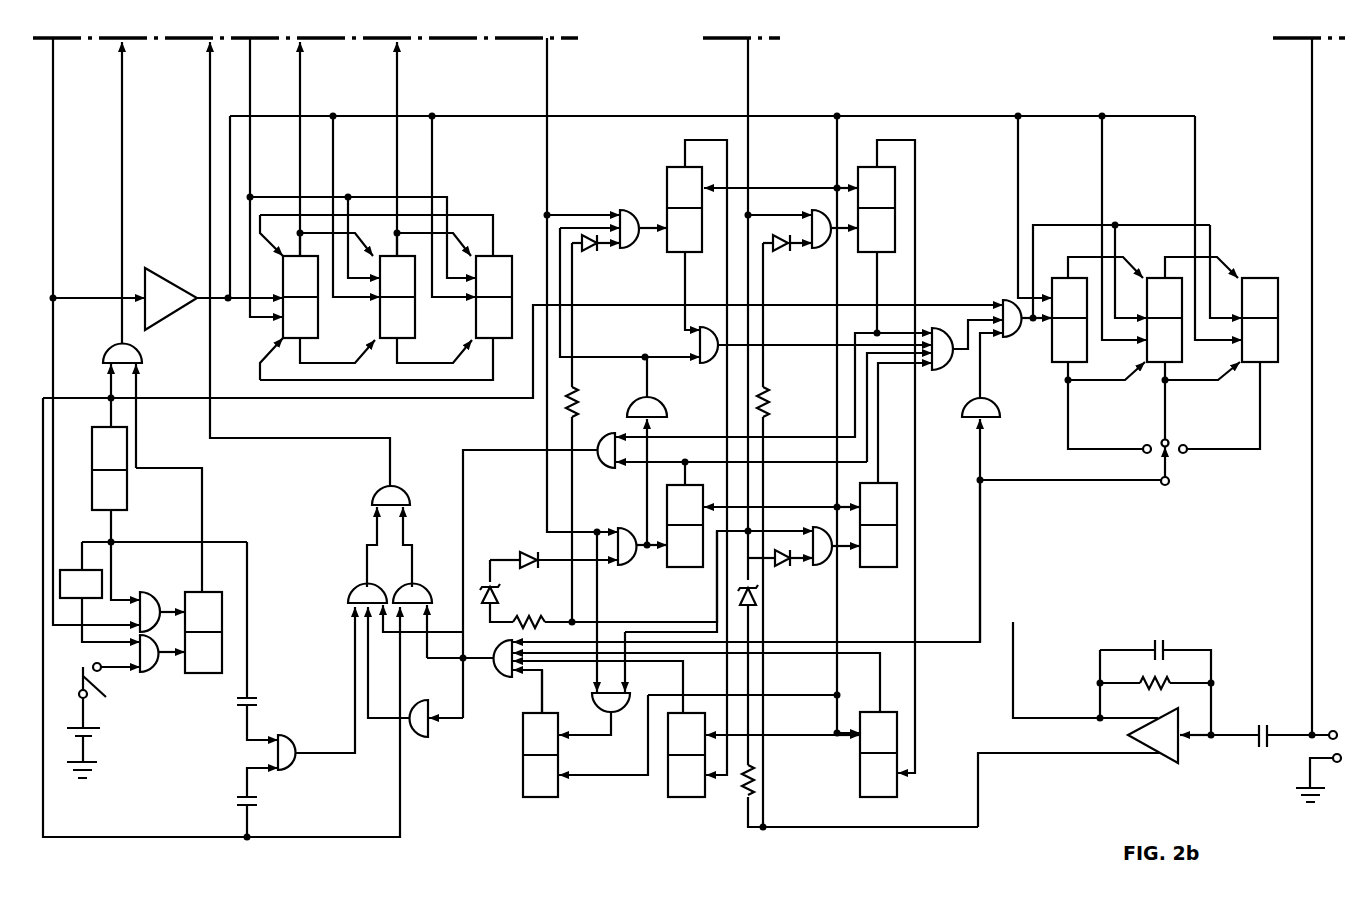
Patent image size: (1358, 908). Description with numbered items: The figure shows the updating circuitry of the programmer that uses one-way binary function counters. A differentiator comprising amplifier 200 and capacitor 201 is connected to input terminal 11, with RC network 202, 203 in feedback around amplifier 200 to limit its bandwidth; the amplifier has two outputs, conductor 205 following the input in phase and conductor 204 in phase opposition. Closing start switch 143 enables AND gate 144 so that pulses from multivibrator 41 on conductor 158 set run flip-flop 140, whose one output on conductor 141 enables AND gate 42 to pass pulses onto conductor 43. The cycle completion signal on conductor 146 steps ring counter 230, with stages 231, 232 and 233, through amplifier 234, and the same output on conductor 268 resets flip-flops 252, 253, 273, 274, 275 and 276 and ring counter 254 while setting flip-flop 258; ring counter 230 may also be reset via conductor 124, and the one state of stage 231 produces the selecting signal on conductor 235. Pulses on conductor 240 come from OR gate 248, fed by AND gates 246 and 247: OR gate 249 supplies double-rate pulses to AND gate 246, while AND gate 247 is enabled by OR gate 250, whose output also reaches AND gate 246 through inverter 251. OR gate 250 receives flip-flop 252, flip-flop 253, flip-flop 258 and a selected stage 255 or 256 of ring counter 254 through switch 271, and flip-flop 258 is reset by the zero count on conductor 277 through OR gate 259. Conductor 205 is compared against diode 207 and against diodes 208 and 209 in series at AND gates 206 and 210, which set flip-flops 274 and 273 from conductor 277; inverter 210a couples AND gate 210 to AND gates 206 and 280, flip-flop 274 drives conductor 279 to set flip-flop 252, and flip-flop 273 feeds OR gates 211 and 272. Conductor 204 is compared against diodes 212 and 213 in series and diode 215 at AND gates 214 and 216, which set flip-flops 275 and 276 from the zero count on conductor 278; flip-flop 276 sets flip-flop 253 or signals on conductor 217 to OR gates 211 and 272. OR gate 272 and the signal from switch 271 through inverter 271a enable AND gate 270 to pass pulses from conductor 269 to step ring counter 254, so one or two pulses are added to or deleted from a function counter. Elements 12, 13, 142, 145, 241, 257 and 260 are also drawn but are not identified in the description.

The input terminal 11 is at (1333, 728).
The ground terminal 12 is at (1337, 762).
The output line 13 is at (1312, 80).
The multivibrator 41 is at (127, 495).
The AND gate 42 is at (103, 345).
The conductor 43 is at (122, 68).
The conductor 124 is at (250, 90).
The run flip-flop 140 is at (205, 673).
The conductor 141 is at (204, 492).
The battery 142 is at (102, 742).
The start switch 143 is at (100, 700).
The AND gate 144 is at (157, 672).
The AND gate 145 is at (160, 590).
The conductor 146 is at (53, 90).
The conductor 158 is at (108, 837).
The amplifier 200 is at (1160, 763).
The capacitor 201 is at (1262, 722).
The RC network 202 is at (1165, 645).
The RC network 203 is at (1148, 690).
The output conductor 204 is at (978, 745).
The output conductor 205 is at (1015, 692).
The AND gate 206 is at (622, 208).
The diode 207 is at (590, 252).
The diode 208 is at (500, 592).
The diode 209 is at (527, 550).
The AND gate 210 is at (640, 512).
The inverter 210a is at (646, 398).
The OR gate 211 is at (600, 468).
The diode 212 is at (758, 602).
The diode 213 is at (785, 568).
The AND gate 214 is at (815, 527).
The diode 215 is at (783, 252).
The AND gate 216 is at (820, 208).
The conductor 217 is at (802, 440).
The ring counter 230 is at (360, 248).
The stage 231 is at (318, 320).
The stage 232 is at (415, 320).
The stage 233 is at (512, 340).
The amplifier 234 is at (172, 266).
The conductor 235 is at (300, 70).
The conductor 240 is at (210, 95).
The line 241 is at (397, 76).
The AND gate 246 is at (348, 590).
The AND gate 247 is at (432, 592).
The OR gate 248 is at (390, 487).
The OR gate 249 is at (290, 770).
The OR gate 250 is at (494, 648).
The inverter 251 is at (420, 737).
The flip-flop 252 is at (668, 777).
The flip-flop 253 is at (860, 780).
The ring counter 254 is at (1158, 260).
The stage 255 is at (1087, 350).
The stage 256 is at (1182, 350).
The flip-flop stage 257 is at (1278, 352).
The flip-flop 258 is at (523, 775).
The OR gate 259 is at (590, 702).
The line 260 is at (540, 696).
The conductor 268 is at (275, 116).
The conductor 269 is at (473, 396).
The AND gate 270 is at (1020, 335).
The switch 271 is at (1168, 462).
The inverter 271a is at (1000, 405).
The OR gate 272 is at (950, 372).
The flip-flop 273 is at (685, 567).
The flip-flop 274 is at (702, 250).
The flip-flop 275 is at (878, 567).
The flip-flop 276 is at (895, 250).
The conductor 277 is at (547, 92).
The conductor 278 is at (748, 92).
The conductor 279 is at (685, 148).
The AND gate 280 is at (722, 362).